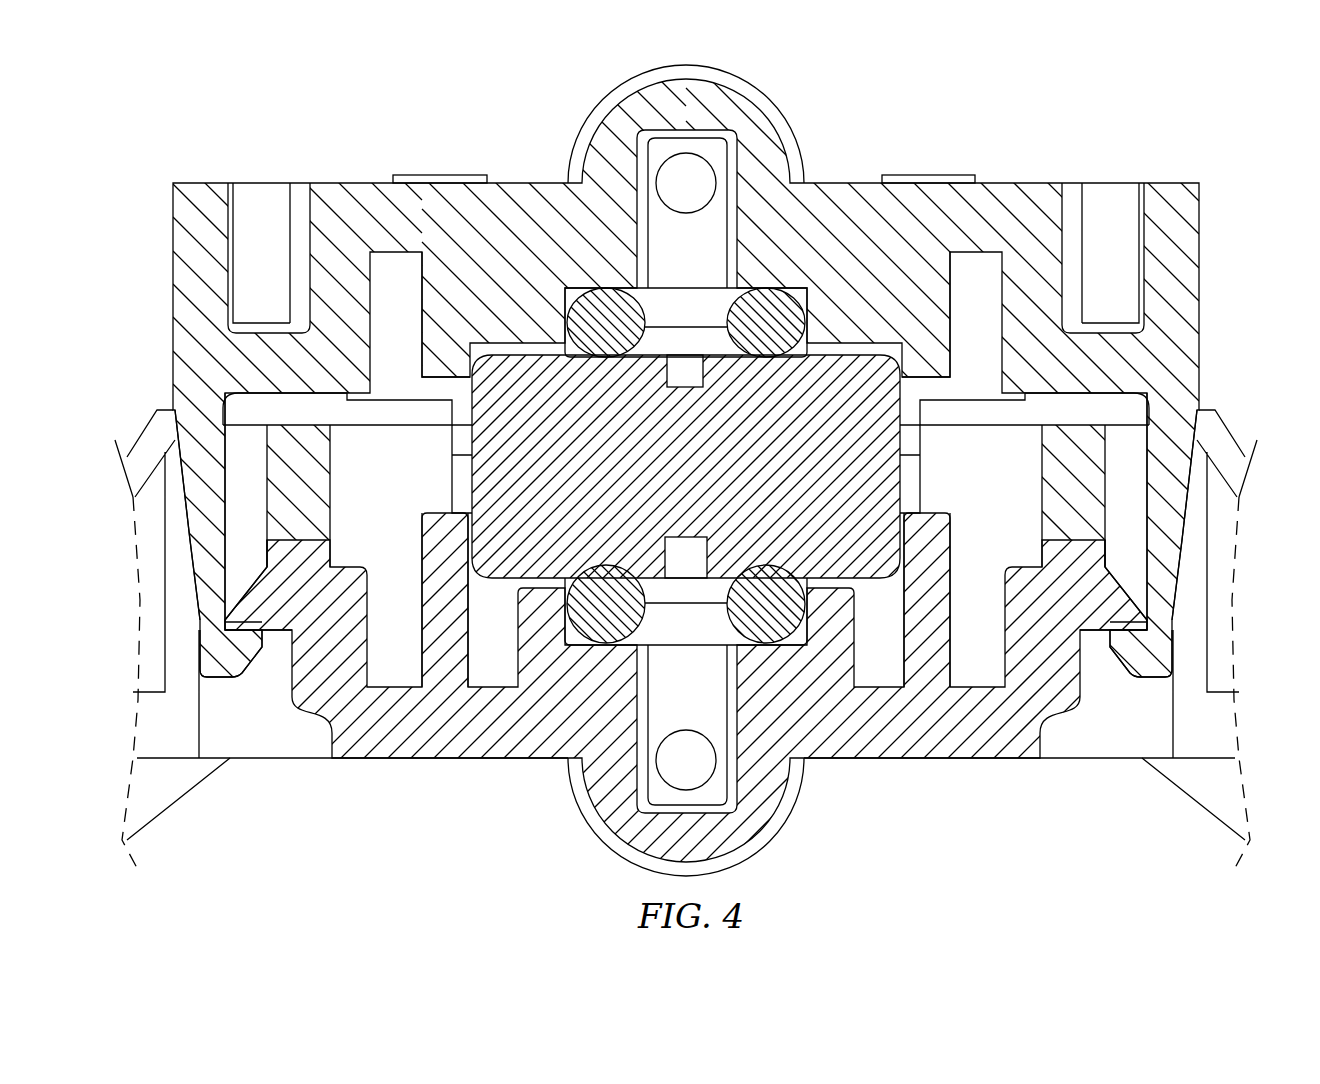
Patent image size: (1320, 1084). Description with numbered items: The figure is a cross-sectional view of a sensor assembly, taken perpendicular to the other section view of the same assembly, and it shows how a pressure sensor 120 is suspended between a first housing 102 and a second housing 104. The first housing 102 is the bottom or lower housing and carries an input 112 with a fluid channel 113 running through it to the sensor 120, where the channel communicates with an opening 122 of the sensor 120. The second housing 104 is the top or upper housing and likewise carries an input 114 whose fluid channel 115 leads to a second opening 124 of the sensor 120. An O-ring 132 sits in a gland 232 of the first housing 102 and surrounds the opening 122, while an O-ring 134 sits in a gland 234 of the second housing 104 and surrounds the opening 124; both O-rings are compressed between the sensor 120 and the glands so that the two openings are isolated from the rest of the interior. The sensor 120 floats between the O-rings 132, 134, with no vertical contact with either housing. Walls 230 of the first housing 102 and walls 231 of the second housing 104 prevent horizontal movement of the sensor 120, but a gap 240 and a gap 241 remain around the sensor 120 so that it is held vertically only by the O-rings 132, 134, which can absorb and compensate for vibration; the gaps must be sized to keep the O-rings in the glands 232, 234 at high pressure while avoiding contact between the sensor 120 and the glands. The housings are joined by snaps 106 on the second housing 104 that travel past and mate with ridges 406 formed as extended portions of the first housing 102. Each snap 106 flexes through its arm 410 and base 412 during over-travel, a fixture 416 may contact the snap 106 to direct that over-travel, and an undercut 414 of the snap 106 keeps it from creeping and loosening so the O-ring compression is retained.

The first housing 102 is at (390, 745).
The second housing 104 is at (368, 196).
The snap 106 is at (203, 458).
The input 112 is at (745, 862).
The fluid channel 113 is at (688, 765).
The input 114 is at (618, 77).
The fluid channel 115 is at (690, 170).
The sensor 120 is at (704, 479).
The opening 122 is at (706, 537).
The opening 124 is at (702, 388).
The O-ring 132 is at (626, 619).
The O-ring 134 is at (786, 339).
The wall 230 is at (443, 600).
The wall 231 is at (450, 377).
The gland 232 is at (780, 647).
The gland 234 is at (586, 292).
The gap 240 is at (509, 584).
The gap 241 is at (508, 353).
The ridge 406 is at (275, 485).
The arm 410 is at (200, 518).
The base 412 is at (220, 675).
The undercut 414 is at (253, 628).
The fixture 416 is at (250, 565).